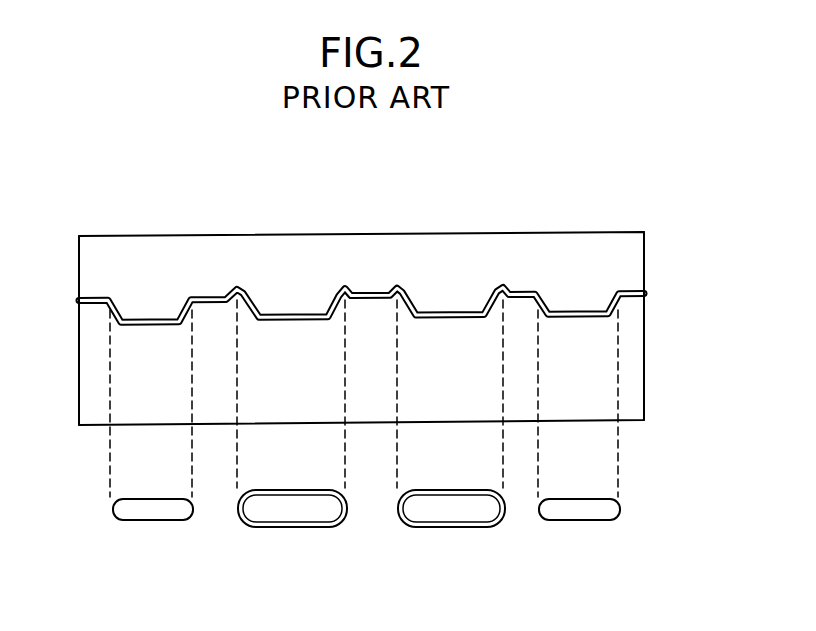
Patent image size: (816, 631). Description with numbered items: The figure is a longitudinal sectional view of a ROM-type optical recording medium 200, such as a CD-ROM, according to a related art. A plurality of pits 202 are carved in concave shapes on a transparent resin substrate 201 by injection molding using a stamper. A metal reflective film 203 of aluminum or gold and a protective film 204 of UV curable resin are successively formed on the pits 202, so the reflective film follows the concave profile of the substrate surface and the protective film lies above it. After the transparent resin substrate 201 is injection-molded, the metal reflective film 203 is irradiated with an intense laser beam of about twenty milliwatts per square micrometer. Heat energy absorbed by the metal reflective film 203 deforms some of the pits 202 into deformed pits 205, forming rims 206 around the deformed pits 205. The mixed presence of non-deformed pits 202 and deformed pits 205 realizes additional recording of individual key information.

The optical recording medium 200 is at (102, 169).
The transparent resin substrate 201 is at (627, 372).
The pits 202 is at (140, 318).
The metal reflective film 203 is at (643, 294).
The protective film 204 is at (627, 258).
The deformed pits 205 is at (279, 312).
The rims 206 is at (233, 290).